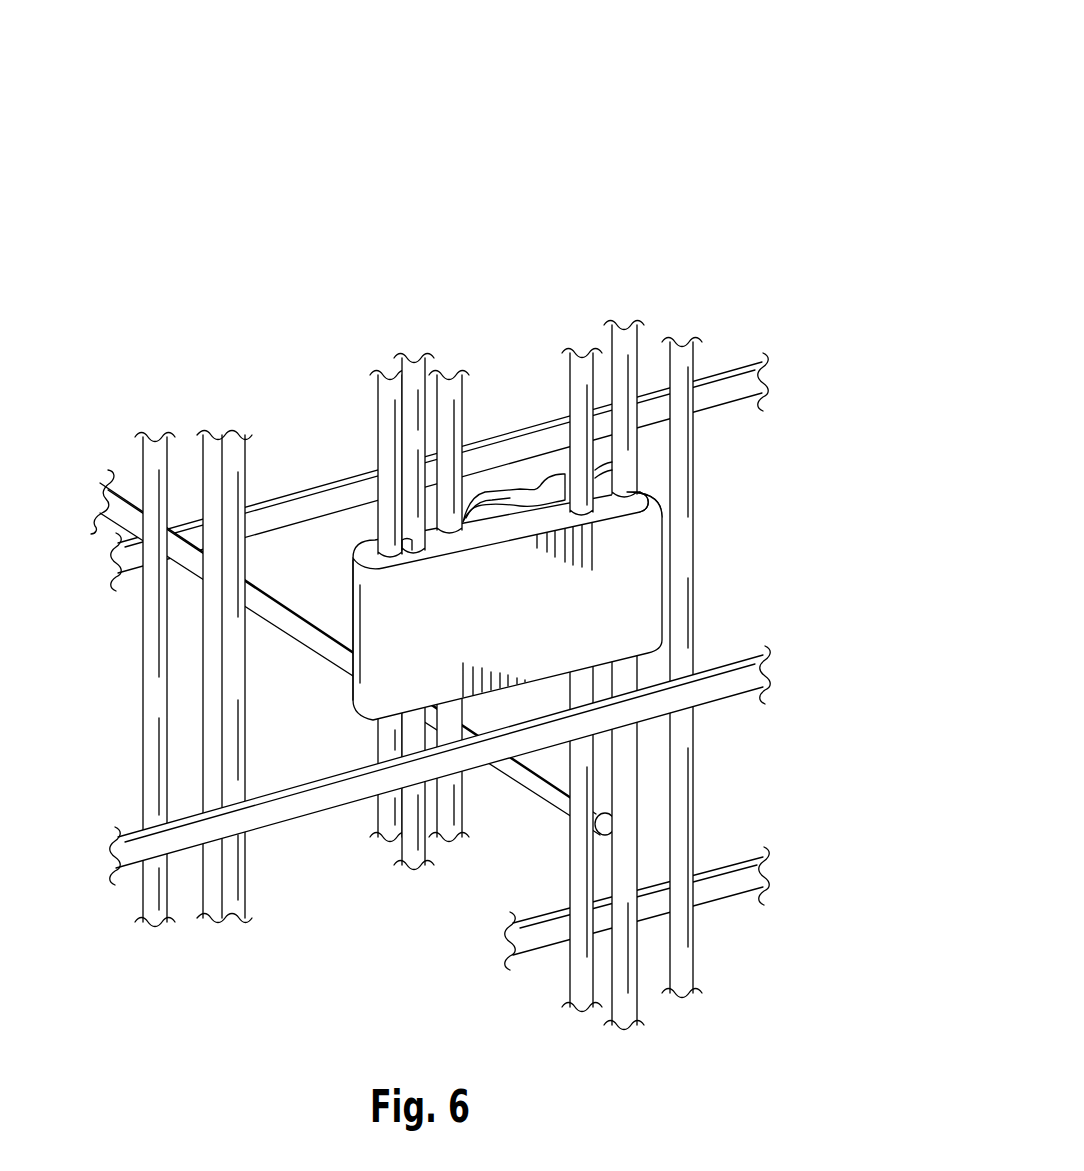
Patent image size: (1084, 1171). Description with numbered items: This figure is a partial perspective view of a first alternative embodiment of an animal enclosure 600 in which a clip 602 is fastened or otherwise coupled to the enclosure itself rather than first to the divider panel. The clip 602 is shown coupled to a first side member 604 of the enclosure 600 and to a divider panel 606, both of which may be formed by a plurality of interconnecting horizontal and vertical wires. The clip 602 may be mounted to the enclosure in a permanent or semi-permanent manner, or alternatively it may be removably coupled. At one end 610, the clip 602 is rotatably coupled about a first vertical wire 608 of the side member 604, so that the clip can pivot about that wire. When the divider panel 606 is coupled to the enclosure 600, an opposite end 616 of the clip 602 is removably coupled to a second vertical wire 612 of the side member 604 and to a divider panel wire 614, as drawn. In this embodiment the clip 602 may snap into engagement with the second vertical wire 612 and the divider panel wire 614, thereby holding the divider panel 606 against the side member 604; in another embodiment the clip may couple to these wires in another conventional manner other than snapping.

The animal enclosure 600 is at (435, 515).
The clip 602 is at (640, 577).
The first side member 604 is at (313, 802).
The divider panel 606 is at (297, 625).
The first vertical wire 608 is at (390, 387).
The one end 610 is at (341, 586).
The second vertical wire 612 is at (635, 338).
The divider panel wire 614 is at (582, 362).
The opposite end 616 is at (547, 450).